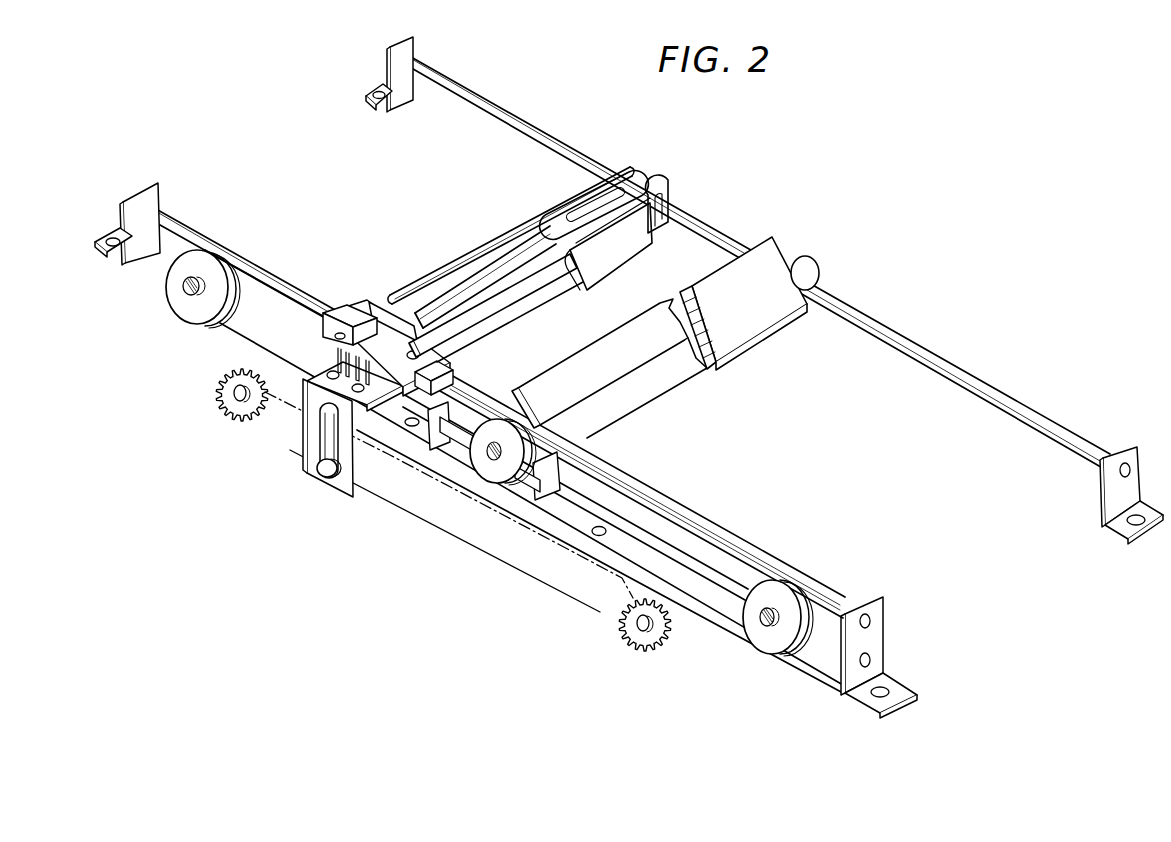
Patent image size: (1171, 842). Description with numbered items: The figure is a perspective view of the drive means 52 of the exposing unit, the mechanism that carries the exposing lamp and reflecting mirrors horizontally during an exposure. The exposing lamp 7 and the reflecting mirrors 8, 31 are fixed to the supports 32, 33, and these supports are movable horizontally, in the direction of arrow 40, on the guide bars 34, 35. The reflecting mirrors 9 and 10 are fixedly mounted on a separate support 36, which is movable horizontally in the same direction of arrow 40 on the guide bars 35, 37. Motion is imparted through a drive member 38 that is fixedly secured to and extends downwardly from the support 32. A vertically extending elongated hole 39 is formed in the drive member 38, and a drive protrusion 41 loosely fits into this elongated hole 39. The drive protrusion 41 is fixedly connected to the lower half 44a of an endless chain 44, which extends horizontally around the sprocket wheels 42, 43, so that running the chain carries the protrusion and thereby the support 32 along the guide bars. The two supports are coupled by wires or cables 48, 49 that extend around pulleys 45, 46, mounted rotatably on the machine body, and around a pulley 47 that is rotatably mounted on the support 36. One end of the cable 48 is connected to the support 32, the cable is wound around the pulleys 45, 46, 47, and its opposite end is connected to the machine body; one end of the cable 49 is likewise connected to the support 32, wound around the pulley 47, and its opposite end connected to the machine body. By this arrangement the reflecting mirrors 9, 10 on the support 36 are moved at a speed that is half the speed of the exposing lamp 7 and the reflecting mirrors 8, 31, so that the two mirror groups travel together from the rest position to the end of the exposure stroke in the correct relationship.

The exposing lamp 7 is at (462, 280).
The reflecting mirror 8 is at (487, 255).
The reflecting mirror 9 is at (668, 298).
The reflecting mirror 10 is at (494, 465).
The reflecting mirror 31 is at (602, 258).
The support 32 is at (344, 310).
The support 33 is at (672, 212).
The guide bar 34 is at (267, 273).
The guide bar 35 is at (513, 117).
The support 36 is at (778, 317).
The guide bar 37 is at (707, 577).
The drive member 38 is at (310, 458).
The elongated hole 39 is at (333, 452).
The arrow 40 is at (833, 447).
The drive protrusion 41 is at (323, 480).
The sprocket wheel 42 is at (650, 645).
The sprocket wheel 43 is at (230, 410).
The endless chain 44 is at (527, 530).
The lower half of endless chain 44a is at (432, 530).
The pulley 45 is at (180, 303).
The pulley 46 is at (777, 640).
The pulley 47 is at (580, 443).
The cable 48 is at (230, 333).
The cable 49 is at (445, 378).
The drive means 52 is at (410, 248).